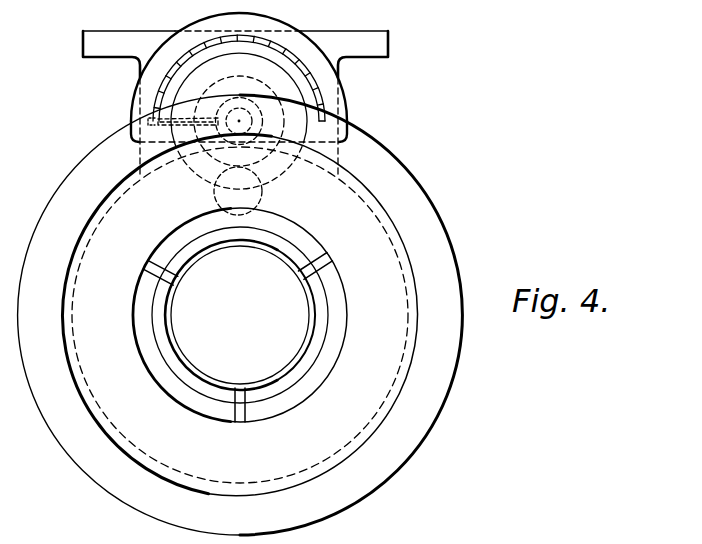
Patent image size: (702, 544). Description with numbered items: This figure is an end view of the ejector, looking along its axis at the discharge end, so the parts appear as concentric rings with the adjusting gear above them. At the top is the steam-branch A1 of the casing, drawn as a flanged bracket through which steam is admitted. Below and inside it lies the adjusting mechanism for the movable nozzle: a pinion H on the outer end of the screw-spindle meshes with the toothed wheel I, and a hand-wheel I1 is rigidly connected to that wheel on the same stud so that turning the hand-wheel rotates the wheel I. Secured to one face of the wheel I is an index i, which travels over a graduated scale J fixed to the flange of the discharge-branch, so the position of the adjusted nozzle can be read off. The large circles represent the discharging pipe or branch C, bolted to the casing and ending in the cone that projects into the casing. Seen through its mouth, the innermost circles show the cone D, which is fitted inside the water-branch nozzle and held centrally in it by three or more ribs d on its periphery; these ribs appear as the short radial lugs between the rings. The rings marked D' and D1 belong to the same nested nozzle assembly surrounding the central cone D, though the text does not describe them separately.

The steam-branch A1 is at (256, 103).
The scale J is at (137, 94).
The toothed wheel I is at (239, 75).
The hand-wheel I1 is at (239, 121).
The index i is at (188, 113).
The pinion H is at (261, 186).
The discharging pipe or branch C is at (240, 315).
The cone D is at (240, 315).
The ring D' is at (244, 315).
The outer ring D1 is at (178, 371).
The ribs d is at (237, 334).